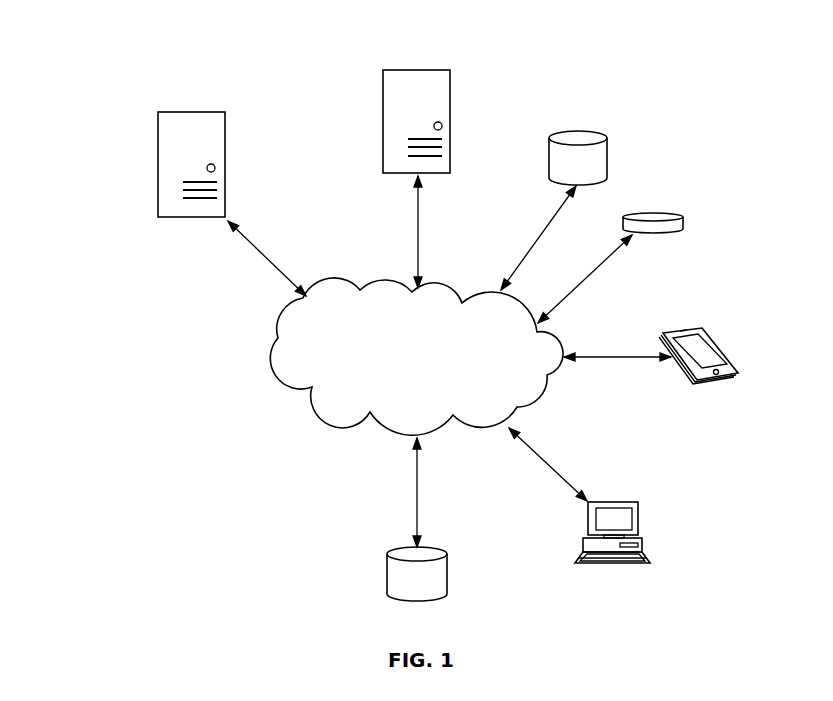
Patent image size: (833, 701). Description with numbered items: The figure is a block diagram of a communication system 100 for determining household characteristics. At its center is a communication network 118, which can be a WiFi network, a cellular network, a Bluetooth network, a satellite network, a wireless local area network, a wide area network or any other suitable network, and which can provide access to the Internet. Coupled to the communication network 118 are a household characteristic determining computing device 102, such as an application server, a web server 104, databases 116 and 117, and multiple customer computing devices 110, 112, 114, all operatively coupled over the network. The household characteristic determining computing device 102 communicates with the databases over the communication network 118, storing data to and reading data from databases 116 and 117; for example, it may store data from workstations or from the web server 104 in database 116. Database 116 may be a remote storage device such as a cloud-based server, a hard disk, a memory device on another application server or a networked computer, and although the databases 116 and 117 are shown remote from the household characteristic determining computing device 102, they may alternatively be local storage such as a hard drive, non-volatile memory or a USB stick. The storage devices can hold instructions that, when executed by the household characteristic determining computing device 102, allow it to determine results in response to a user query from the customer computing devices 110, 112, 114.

The communication system 100 is at (748, 46).
The household characteristic determining computing device 102 is at (437, 69).
The web server 104 is at (163, 111).
The customer computing device 110 is at (672, 213).
The customer computing device 112 is at (717, 345).
The customer computing device 114 is at (633, 500).
The database 116 is at (438, 549).
The database 117 is at (597, 131).
The communication network 118 is at (276, 381).